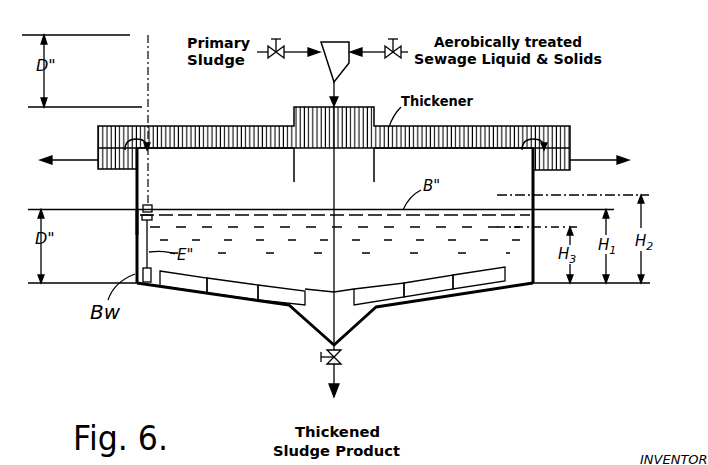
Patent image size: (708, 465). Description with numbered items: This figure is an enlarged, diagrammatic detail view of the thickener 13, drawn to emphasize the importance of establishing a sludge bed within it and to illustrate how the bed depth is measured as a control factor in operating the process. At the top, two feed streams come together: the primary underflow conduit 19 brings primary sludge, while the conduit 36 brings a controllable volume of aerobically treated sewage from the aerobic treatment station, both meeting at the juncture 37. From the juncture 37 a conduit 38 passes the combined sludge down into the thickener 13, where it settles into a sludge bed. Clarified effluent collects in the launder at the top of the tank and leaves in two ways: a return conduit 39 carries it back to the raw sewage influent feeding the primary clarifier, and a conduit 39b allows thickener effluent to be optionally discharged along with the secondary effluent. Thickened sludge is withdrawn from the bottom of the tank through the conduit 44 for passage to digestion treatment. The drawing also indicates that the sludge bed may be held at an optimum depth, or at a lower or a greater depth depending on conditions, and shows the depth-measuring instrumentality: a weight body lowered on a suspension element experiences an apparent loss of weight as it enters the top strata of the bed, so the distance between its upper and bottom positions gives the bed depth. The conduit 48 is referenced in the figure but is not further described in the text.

The thickener 13 is at (127, 224).
The primary underflow conduit 19 is at (283, 47).
The conduit 36 is at (386, 47).
The juncture 37 is at (320, 62).
The conduit 38 is at (337, 89).
The return conduit 39 is at (83, 158).
The conduit 39b is at (591, 160).
The conduit 44 is at (337, 368).
The conduit 48 is at (606, 4).